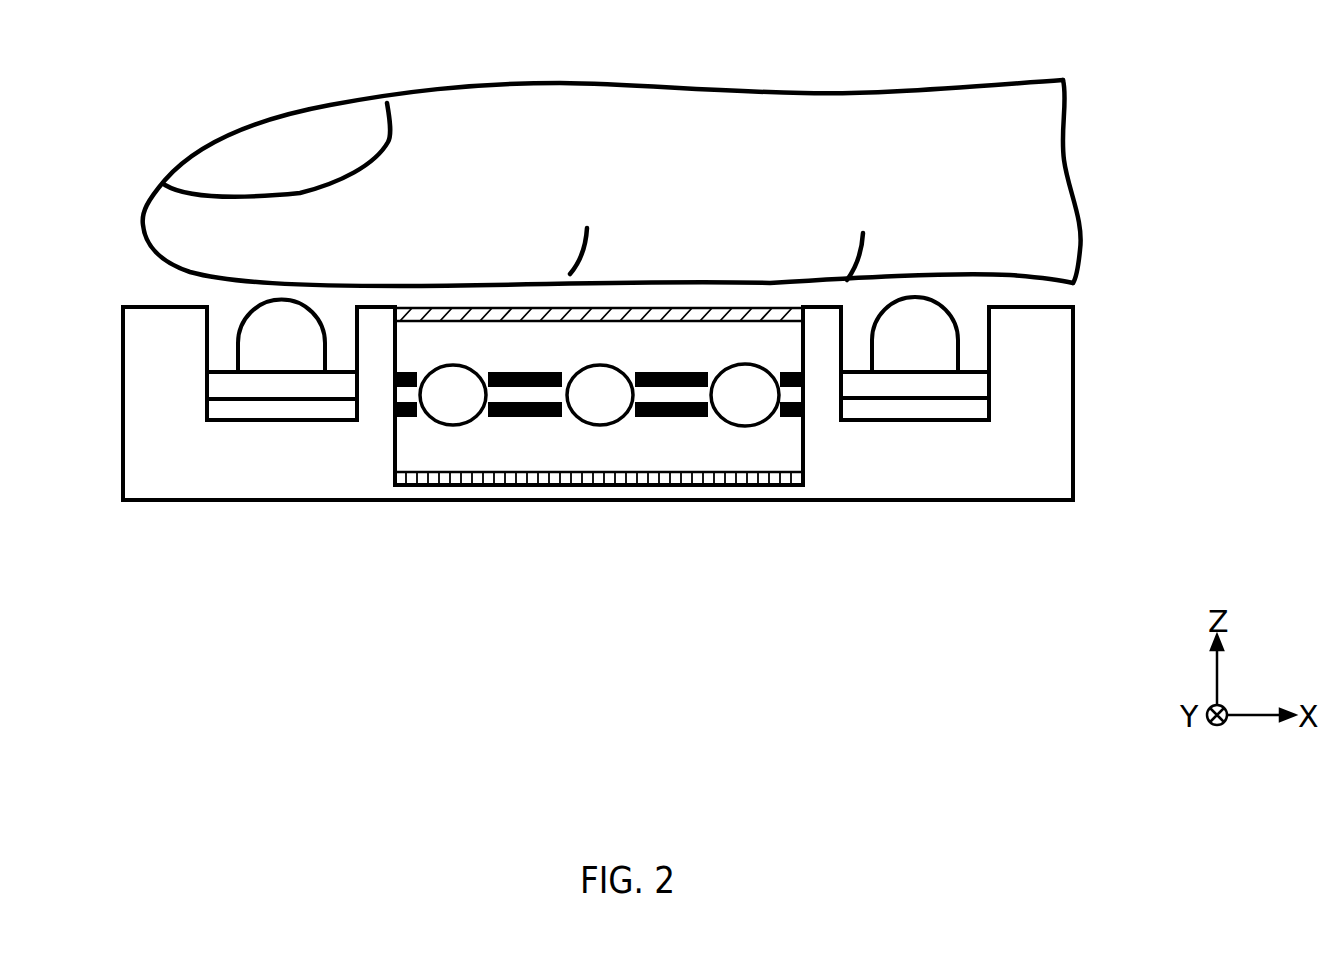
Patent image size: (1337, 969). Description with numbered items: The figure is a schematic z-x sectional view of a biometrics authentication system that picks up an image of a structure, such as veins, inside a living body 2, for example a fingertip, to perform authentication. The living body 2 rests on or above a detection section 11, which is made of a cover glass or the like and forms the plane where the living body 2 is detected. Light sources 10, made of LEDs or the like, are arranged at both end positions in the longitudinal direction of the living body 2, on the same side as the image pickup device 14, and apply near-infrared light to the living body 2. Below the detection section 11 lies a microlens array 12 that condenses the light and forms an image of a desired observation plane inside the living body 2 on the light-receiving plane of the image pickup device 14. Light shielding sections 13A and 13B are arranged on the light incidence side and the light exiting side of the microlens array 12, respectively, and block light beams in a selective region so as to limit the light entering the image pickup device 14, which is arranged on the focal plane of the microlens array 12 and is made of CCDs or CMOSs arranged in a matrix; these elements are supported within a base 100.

The living body 2 is at (836, 93).
The light sources 10 is at (228, 386).
The detection section 11 is at (800, 306).
The microlens array 12 is at (740, 380).
The light shielding section 13A is at (803, 378).
The light shielding section 13B is at (803, 407).
The image pickup device 14 is at (803, 478).
The housing / base 100 is at (1058, 490).